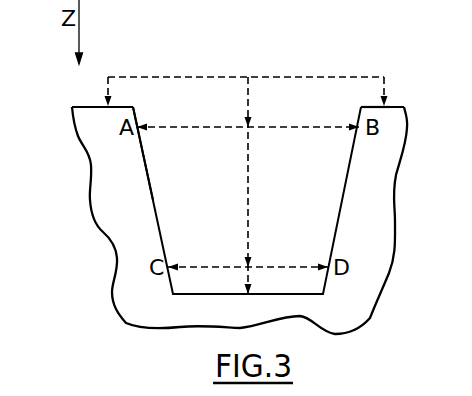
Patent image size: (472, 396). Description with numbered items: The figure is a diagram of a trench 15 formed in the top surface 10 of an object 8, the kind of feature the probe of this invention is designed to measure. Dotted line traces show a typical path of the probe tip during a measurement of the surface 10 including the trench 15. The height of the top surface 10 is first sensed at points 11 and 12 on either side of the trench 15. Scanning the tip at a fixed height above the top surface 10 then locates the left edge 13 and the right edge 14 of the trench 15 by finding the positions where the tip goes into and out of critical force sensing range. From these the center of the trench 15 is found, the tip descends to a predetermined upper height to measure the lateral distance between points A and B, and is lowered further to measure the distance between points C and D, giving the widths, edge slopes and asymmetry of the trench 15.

The object 8 is at (391, 266).
The top surface 10 is at (95, 106).
The point 11 is at (119, 103).
The point 12 is at (397, 107).
The left edge 13 is at (134, 106).
The right edge 14 is at (361, 107).
The trench 15 is at (299, 203).